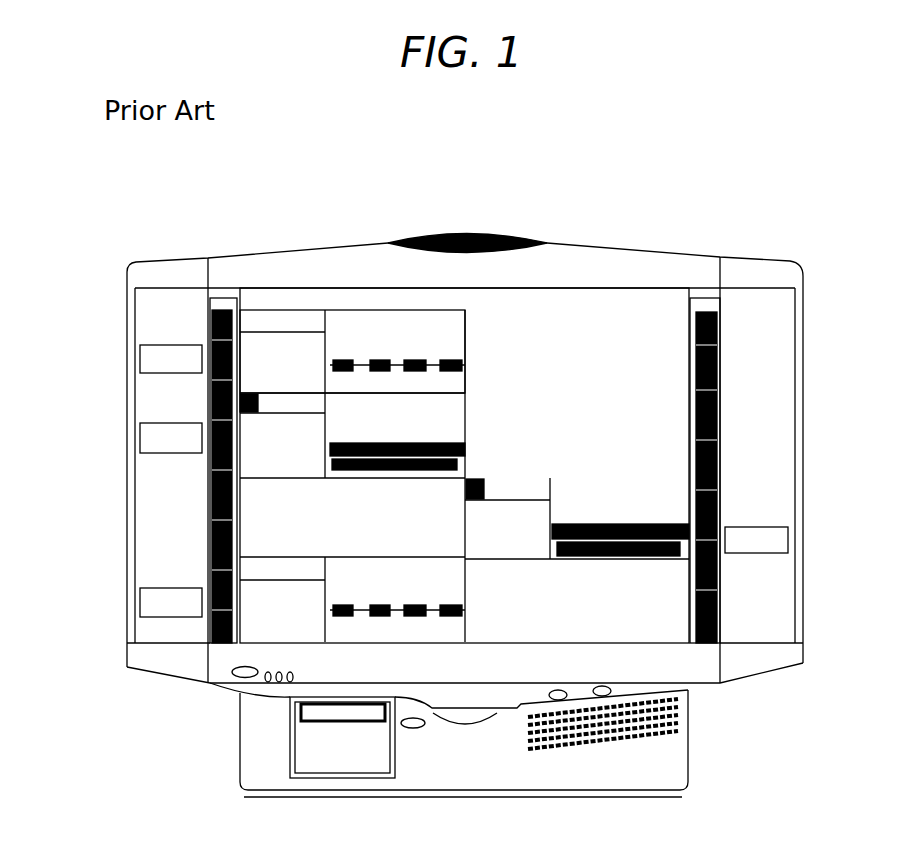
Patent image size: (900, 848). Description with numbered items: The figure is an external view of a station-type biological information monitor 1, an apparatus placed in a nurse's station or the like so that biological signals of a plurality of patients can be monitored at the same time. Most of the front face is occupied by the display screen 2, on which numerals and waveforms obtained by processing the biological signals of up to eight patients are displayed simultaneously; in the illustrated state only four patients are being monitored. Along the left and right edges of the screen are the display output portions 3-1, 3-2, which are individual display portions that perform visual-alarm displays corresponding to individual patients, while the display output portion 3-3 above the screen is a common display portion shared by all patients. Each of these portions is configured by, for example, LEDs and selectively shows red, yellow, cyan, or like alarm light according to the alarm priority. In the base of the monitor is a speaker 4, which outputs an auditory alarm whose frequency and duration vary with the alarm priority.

The biological information monitor of the station type 1 is at (785, 262).
The display screen 2 is at (650, 303).
The display output portion 3-1 is at (208, 505).
The display output portion 3-2 is at (720, 420).
The display output portion 3-3 is at (497, 228).
The speaker 4 is at (690, 720).